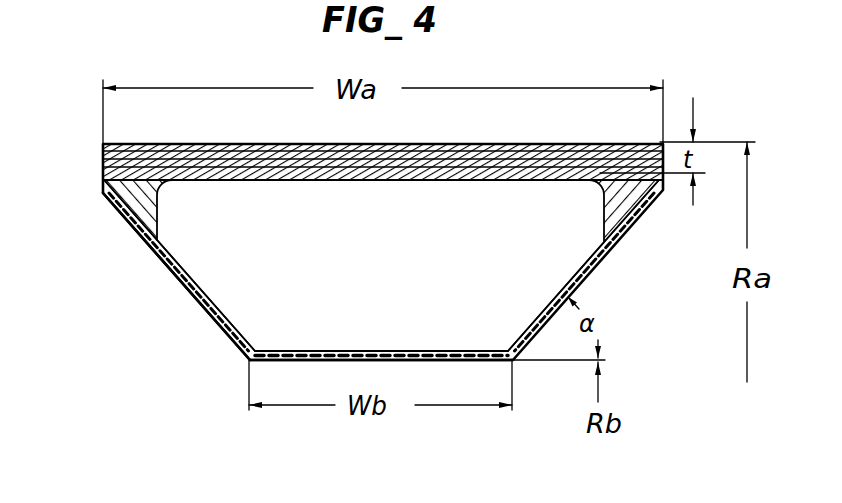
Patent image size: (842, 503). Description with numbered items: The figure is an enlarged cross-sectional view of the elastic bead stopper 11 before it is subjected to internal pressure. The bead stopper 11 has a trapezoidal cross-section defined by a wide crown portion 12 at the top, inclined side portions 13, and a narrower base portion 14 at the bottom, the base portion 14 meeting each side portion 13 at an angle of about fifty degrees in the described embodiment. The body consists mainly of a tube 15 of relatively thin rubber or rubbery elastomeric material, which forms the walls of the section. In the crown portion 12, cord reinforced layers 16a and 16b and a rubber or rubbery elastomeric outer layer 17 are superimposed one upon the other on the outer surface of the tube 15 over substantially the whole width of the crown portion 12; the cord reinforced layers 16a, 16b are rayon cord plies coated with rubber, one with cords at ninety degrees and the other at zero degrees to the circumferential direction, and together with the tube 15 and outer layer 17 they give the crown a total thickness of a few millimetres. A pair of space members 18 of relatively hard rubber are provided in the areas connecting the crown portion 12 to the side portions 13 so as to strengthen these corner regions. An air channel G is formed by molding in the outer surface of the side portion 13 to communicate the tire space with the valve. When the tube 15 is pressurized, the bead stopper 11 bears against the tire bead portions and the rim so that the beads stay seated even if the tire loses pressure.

The bead stopper 11 is at (390, 274).
The crown portion 12 is at (188, 140).
The side portion 13 is at (205, 312).
The base portion 14 is at (318, 353).
The tube 15 is at (445, 364).
The cord reinforced layer 16a is at (510, 160).
The cord reinforced layer 16b is at (243, 163).
The outer layer 17 is at (462, 144).
The space member 18 is at (108, 179).
The air channel G is at (140, 230).